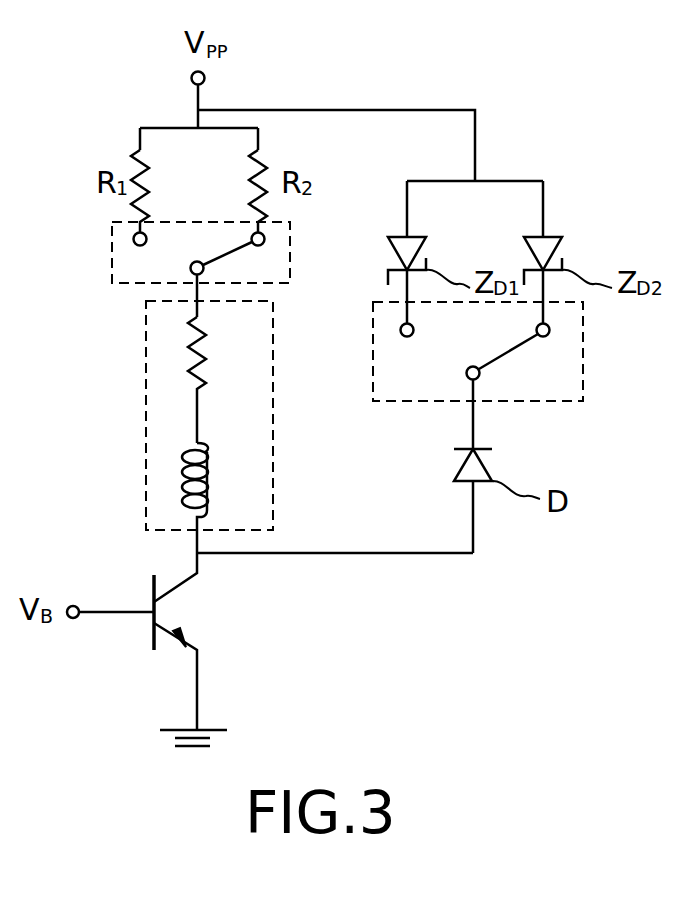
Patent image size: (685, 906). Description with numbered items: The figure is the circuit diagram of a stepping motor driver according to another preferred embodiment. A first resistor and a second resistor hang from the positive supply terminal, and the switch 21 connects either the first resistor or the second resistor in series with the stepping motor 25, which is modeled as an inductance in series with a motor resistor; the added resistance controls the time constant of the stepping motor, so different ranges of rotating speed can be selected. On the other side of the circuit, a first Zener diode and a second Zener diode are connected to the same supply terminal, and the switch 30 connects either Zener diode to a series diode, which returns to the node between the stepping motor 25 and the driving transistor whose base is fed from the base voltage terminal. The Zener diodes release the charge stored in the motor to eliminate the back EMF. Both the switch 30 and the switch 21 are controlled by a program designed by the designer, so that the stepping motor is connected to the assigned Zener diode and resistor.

The switch 21 is at (112, 265).
The stepping motor 25 is at (146, 411).
The switch 30 is at (583, 363).